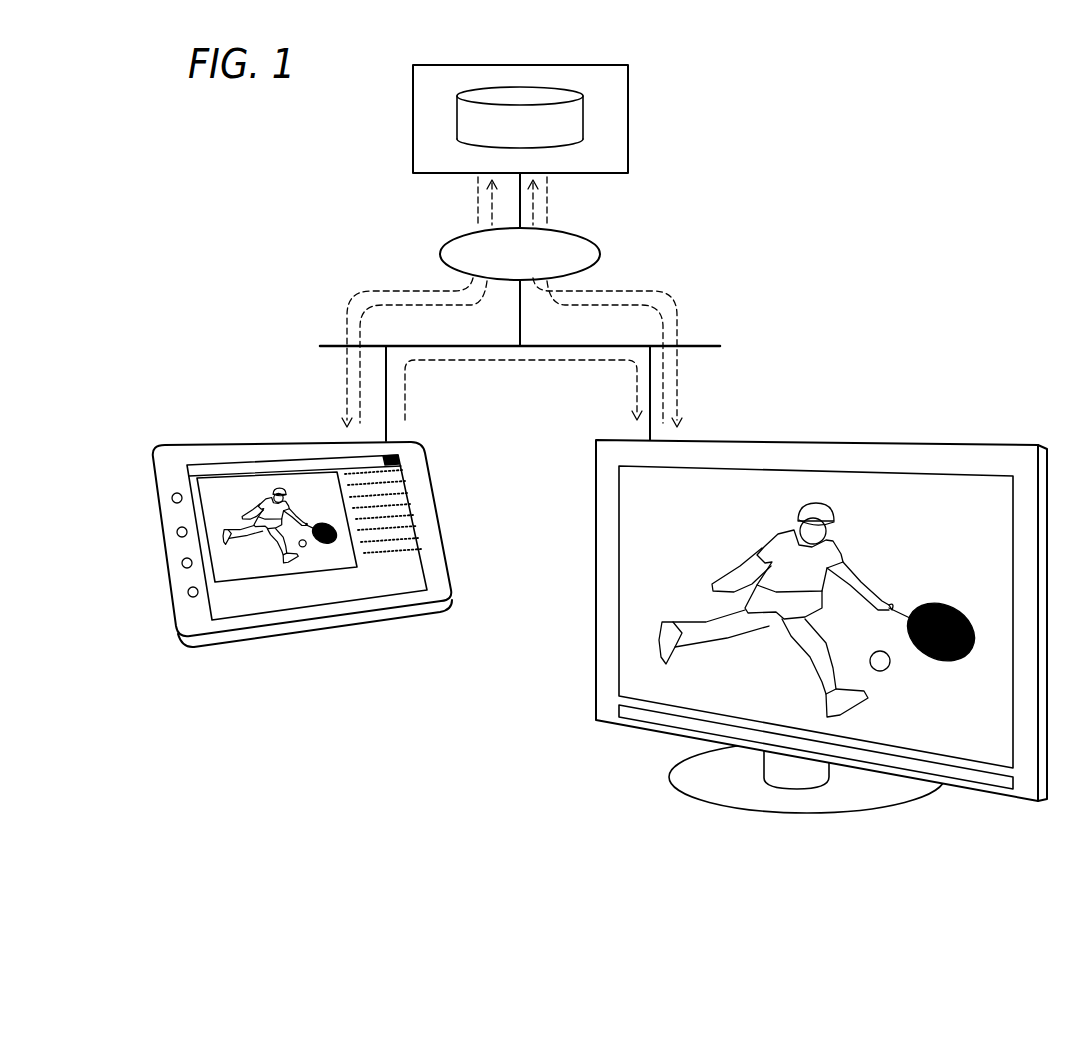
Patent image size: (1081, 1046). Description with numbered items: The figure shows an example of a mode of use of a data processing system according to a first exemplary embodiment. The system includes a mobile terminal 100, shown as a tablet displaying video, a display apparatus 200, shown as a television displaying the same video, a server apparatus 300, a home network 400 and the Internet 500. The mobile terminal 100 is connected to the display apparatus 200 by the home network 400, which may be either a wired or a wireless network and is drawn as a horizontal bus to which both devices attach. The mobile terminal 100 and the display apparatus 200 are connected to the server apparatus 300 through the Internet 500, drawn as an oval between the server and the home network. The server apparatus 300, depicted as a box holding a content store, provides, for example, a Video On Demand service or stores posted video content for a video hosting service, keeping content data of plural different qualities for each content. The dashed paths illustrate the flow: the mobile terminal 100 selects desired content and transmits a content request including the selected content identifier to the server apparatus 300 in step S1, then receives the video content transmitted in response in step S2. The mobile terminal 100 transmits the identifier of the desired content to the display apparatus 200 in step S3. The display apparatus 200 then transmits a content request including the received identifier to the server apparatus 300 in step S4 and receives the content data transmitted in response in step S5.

The mobile terminal 100 is at (190, 443).
The display apparatus 200 is at (943, 441).
The server apparatus 300 is at (628, 107).
The home network 400 is at (707, 346).
The Internet 500 is at (583, 237).
The content request transmission S1 is at (407, 305).
The video content reception S2 is at (392, 290).
The identifier transmission to display apparatus S3 is at (507, 361).
The content request from display apparatus S4 is at (645, 307).
The content data reception by display apparatus S5 is at (653, 291).